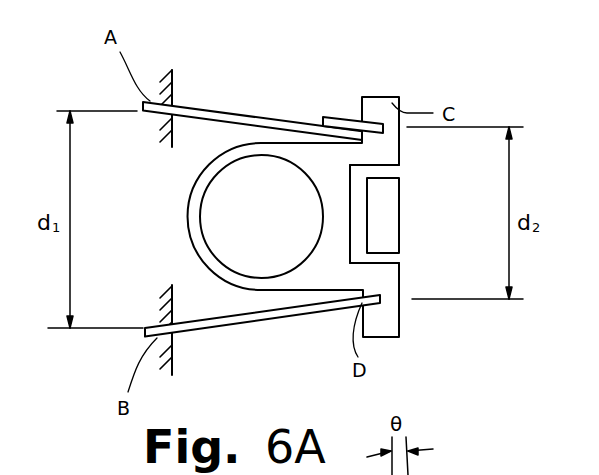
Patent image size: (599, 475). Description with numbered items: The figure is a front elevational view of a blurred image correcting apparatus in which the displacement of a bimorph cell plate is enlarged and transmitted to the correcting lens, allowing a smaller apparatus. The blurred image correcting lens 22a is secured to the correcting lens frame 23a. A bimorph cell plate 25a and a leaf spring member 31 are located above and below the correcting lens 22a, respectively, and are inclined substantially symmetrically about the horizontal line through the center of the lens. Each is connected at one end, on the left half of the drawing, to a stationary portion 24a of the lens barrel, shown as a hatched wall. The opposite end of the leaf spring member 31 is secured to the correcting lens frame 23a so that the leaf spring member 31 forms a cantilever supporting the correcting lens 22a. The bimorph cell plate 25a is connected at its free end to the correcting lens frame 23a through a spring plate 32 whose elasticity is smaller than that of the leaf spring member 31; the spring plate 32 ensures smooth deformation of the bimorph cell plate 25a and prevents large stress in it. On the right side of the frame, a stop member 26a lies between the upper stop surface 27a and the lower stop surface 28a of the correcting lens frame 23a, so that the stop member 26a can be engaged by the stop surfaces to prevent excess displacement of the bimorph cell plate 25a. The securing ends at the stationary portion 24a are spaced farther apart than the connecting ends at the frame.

The blurred image correcting lens 22a is at (214, 205).
The correcting lens frame 23a is at (399, 97).
The stationary portion 24a is at (175, 82).
The bimorph cell plate 25a is at (258, 114).
The stop member 26a is at (390, 227).
The upper stop surface 27a is at (390, 168).
The lower stop surface 28a is at (390, 262).
The leaf spring member 31 is at (262, 313).
The spring plate 32 is at (348, 119).